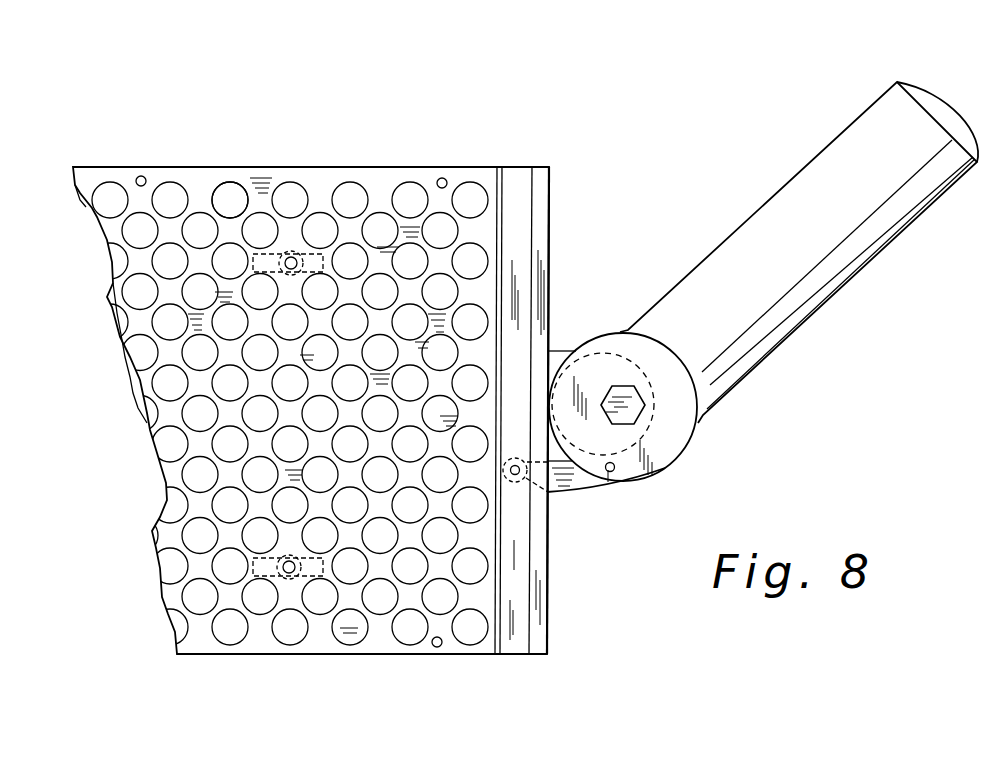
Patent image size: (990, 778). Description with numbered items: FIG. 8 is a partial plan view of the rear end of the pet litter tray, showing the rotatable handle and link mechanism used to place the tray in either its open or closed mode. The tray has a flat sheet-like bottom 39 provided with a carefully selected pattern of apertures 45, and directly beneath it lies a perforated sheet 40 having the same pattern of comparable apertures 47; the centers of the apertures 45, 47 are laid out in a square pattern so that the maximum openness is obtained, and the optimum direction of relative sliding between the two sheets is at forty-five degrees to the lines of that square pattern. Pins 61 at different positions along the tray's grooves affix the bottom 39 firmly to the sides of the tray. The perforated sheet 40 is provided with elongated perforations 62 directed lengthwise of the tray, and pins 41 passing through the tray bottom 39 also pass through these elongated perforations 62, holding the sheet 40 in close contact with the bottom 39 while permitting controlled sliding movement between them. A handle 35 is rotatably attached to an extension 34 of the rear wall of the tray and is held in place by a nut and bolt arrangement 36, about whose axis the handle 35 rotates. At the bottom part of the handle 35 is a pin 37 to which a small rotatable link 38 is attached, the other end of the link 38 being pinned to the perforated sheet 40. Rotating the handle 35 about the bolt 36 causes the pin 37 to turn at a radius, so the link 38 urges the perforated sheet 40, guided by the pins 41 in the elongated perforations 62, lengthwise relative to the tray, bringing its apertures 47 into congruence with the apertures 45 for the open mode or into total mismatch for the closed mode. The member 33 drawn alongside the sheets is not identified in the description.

The side rail 33 is at (551, 231).
The extension 34 is at (590, 352).
The handle 35 is at (860, 272).
The nut and bolt arrangement 36 is at (640, 416).
The pin 37 is at (613, 471).
The link 38 is at (568, 487).
The bottom 39 is at (321, 641).
The perforated sheet 40 is at (284, 410).
The pins 41 is at (286, 578).
The apertures 45 is at (236, 194).
The apertures 47 is at (267, 172).
The pins 61 is at (141, 176).
The elongated perforations 62 is at (255, 560).